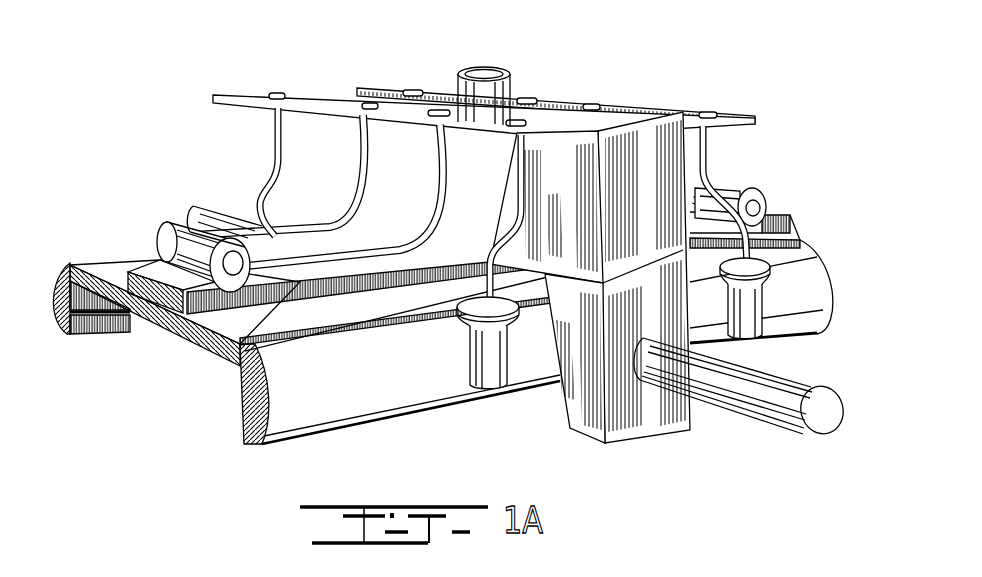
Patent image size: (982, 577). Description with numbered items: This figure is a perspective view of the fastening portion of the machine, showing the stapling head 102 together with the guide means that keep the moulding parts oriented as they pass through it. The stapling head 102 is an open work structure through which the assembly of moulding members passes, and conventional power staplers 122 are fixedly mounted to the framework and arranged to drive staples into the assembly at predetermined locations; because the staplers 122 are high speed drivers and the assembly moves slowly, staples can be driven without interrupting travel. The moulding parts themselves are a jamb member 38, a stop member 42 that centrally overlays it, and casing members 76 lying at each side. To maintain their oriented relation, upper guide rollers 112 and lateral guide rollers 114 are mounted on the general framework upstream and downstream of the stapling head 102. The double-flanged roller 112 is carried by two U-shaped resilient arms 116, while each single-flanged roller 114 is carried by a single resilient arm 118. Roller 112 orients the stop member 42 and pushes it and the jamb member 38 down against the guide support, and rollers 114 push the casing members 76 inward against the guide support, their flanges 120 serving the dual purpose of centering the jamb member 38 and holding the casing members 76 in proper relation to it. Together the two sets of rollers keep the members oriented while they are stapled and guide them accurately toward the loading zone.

The jamb member 38 is at (97, 262).
The stop member 42 is at (147, 270).
The casing member 76 is at (86, 332).
The stapling head 102 is at (621, 132).
The upper guide roller 112 is at (180, 230).
The lateral guide roller 114 is at (470, 352).
The U-shaped resilient arm 116 is at (364, 162).
The single resilient arm 118 is at (273, 137).
The flange 120 is at (460, 302).
The power stapler 122 is at (494, 72).